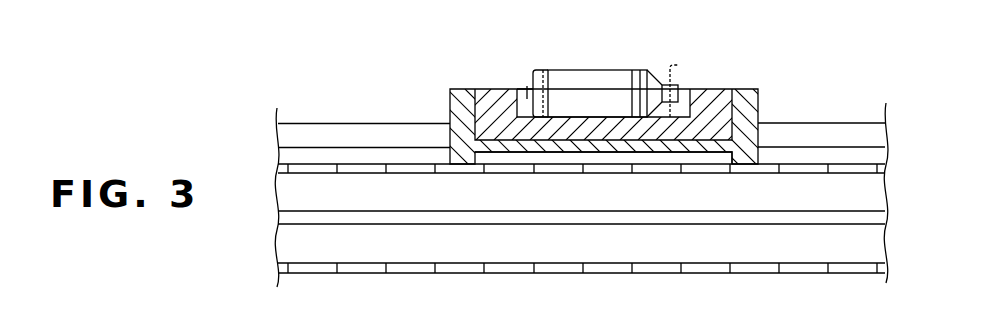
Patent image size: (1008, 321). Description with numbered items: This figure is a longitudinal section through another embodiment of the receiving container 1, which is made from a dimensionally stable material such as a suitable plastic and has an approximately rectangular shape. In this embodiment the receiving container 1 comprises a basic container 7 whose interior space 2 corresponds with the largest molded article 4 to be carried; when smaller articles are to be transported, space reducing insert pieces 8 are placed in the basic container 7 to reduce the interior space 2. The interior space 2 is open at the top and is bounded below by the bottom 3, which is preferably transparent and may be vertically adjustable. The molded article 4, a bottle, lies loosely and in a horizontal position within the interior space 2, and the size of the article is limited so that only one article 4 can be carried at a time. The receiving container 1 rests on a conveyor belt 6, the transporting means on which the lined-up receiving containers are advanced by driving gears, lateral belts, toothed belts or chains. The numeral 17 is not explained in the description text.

The receiving container 1 is at (629, 159).
The interior space 2 is at (688, 93).
The bottom 3 is at (515, 145).
The molded article 4 is at (590, 72).
The conveyor belt 6 is at (872, 181).
The basic container 7 is at (758, 105).
The space reducing insert piece 8 is at (722, 90).
The case assembly 17 is at (601, 159).